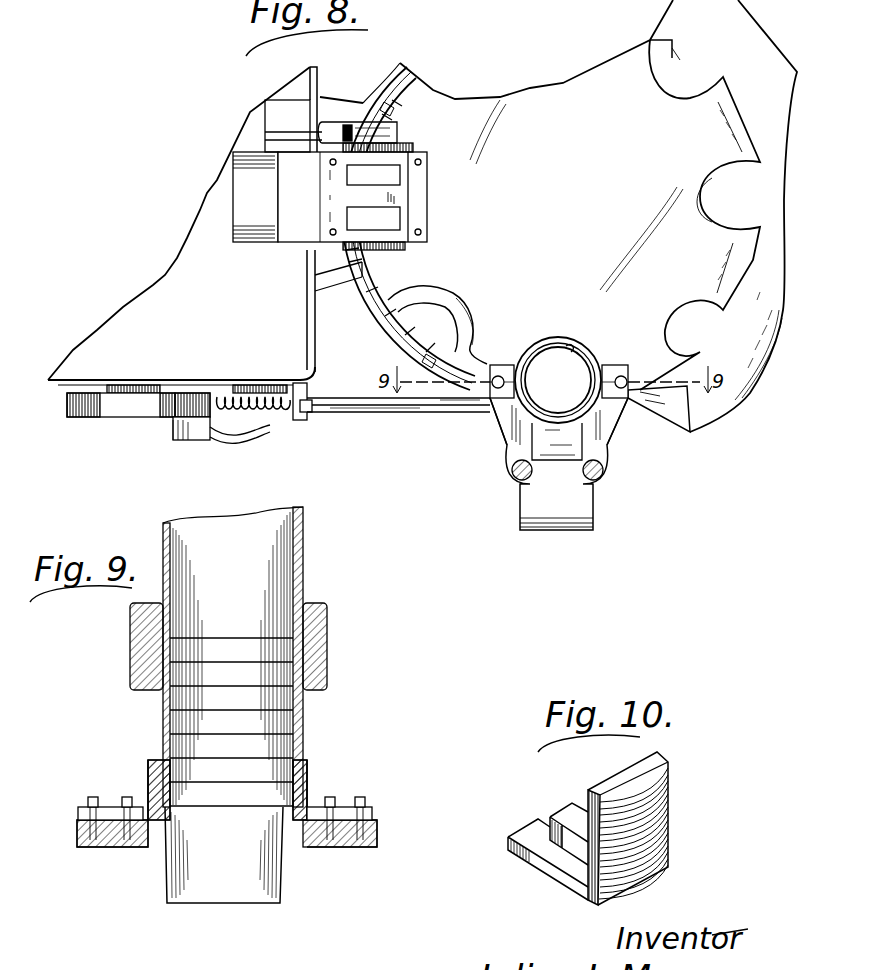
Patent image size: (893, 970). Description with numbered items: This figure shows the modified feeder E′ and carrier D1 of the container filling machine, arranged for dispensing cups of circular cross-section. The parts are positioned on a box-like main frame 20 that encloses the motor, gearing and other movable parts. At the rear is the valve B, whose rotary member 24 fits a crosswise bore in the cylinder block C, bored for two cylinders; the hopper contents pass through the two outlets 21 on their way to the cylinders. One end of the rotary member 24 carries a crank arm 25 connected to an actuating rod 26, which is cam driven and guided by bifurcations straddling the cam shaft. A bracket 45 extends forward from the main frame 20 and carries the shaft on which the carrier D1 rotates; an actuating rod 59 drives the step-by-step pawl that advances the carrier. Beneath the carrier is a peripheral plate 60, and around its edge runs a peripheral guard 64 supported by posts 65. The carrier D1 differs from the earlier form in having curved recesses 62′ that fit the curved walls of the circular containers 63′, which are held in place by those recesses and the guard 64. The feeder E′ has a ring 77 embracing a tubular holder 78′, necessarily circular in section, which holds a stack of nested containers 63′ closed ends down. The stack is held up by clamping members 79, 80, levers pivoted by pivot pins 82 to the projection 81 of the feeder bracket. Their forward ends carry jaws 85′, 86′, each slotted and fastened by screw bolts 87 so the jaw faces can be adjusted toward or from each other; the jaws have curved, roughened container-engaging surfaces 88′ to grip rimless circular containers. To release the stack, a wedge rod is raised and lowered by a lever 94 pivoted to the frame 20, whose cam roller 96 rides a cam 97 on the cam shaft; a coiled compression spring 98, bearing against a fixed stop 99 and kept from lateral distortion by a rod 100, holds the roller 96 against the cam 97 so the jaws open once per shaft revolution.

In FIG. 8, the main frame 20 is at (53, 378).
In FIG. 8, the outlets 21 is at (400, 213).
In FIG. 8, the rotary valve member 24 is at (408, 246).
In FIG. 8, the crank arm 25 is at (347, 122).
In FIG. 8, the actuating rod 26 is at (265, 134).
In FIG. 8, the bracket 45 is at (344, 291).
In FIG. 8, the actuating rod 59 is at (307, 298).
In FIG. 8, the peripheral plate 60 is at (410, 68).
In FIG. 8, the recesses 62′ is at (676, 48).
In FIG. 8, the containers 63′ is at (576, 350).
In FIG. 9, the containers 63′ is at (210, 672).
In FIG. 8, the peripheral guard 64 is at (406, 78).
In FIG. 8, the posts 65 is at (384, 96).
In FIG. 9, the ring 77 is at (328, 648).
In FIG. 8, the holder 78′ is at (562, 345).
In FIG. 9, the holder 78′ is at (305, 580).
In FIG. 8, the clamping member 79 is at (497, 420).
In FIG. 9, the clamping member 79 is at (78, 848).
In FIG. 8, the clamping member 80 is at (610, 430).
In FIG. 9, the clamping member 80 is at (378, 833).
In FIG. 8, the projection 81 is at (540, 530).
In FIG. 8, the pivot pin 82 is at (512, 478).
In FIG. 8, the jaw 85′ is at (508, 362).
In FIG. 9, the jaw 85′ is at (158, 762).
In FIG. 10, the jaw 85′ is at (582, 802).
In FIG. 8, the jaw 86′ is at (612, 345).
In FIG. 9, the jaw 86′ is at (308, 770).
In FIG. 8, the screw bolts 87 is at (498, 376).
In FIG. 9, the screw bolts 87 is at (93, 797).
In FIG. 9, the curved container-engaging surfaces 88′ is at (148, 776).
In FIG. 10, the curved container-engaging surfaces 88′ is at (665, 802).
In FIG. 8, the lever 94 is at (385, 413).
In FIG. 8, the cam roller 96 is at (182, 405).
In FIG. 8, the cam 97 is at (72, 417).
In FIG. 8, the coiled compression spring 98 is at (245, 430).
In FIG. 8, the fixed stop 99 is at (298, 420).
In FIG. 8, the rod 100 is at (303, 413).
In FIG. 8, the valve B is at (414, 150).
In FIG. 8, the cylinder block C is at (290, 248).
In FIG. 8, the carrier D1 is at (530, 88).
In FIG. 8, the feeder E′ is at (503, 437).
In FIG. 9, the feeder E′ is at (308, 742).